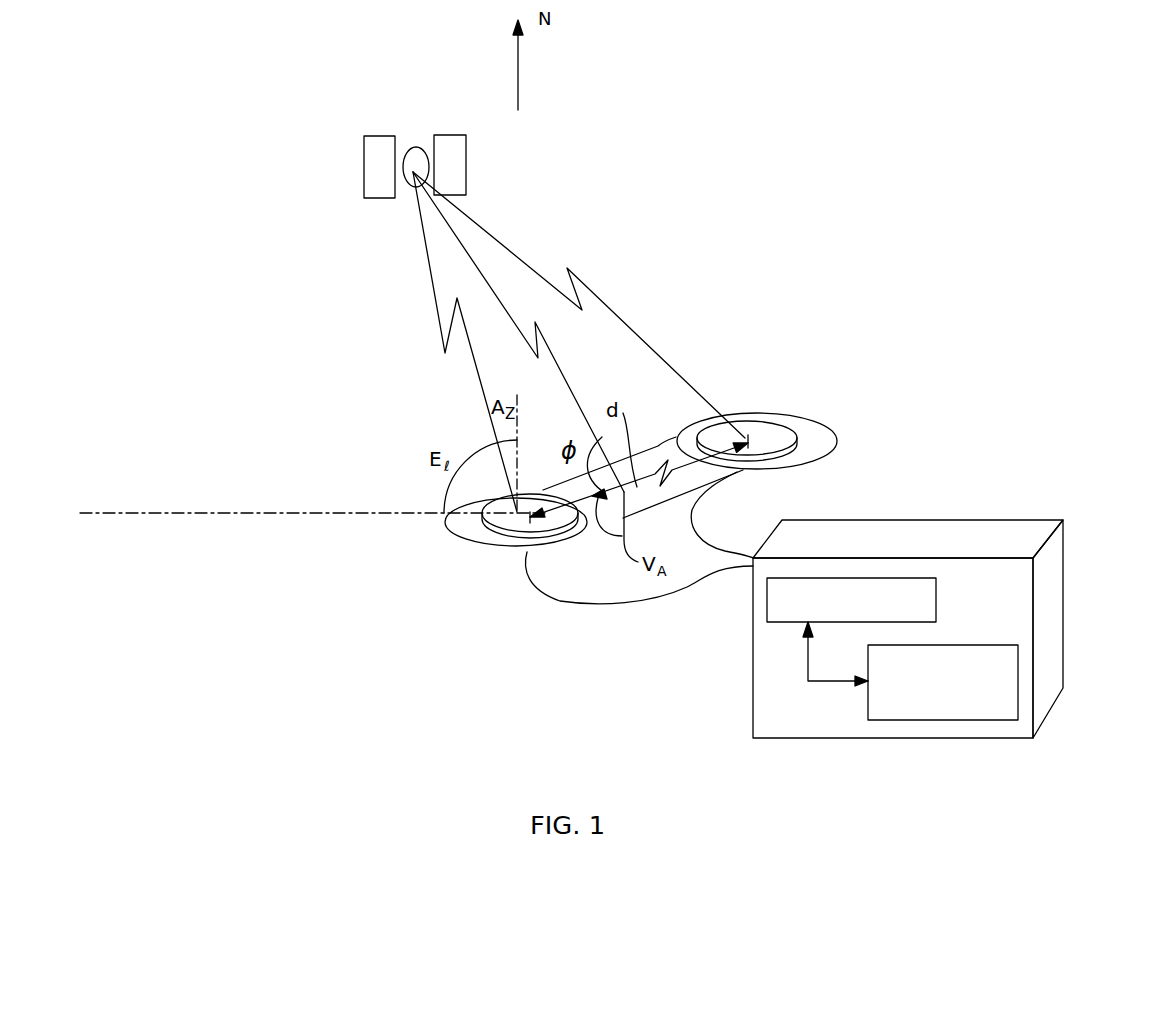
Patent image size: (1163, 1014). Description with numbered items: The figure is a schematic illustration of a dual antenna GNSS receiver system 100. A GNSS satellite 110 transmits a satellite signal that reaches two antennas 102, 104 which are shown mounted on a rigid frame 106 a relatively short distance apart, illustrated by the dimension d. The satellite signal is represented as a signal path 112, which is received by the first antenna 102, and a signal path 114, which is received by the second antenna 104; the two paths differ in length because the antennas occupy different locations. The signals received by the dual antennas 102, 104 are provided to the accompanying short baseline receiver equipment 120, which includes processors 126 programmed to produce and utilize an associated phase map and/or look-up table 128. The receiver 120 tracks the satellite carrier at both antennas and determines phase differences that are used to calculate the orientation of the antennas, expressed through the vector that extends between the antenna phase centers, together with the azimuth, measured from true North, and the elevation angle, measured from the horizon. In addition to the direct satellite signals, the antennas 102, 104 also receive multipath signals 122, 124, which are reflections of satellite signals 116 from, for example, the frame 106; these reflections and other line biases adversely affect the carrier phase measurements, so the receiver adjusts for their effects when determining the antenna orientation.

The system 100 is at (228, 68).
The first antenna 102 is at (487, 520).
The second antenna 104 is at (780, 433).
The rigid frame 106 is at (840, 468).
The GNSS satellite 110 is at (466, 168).
The signal path 112 is at (428, 262).
The signal path 114 is at (497, 240).
The satellite signals 116 is at (557, 357).
The receiver 120 is at (956, 606).
The multipath signal 122 is at (596, 530).
The multipath signal 124 is at (737, 472).
The processors 126 is at (936, 596).
The phase map and/or look-up table 128 is at (1018, 696).